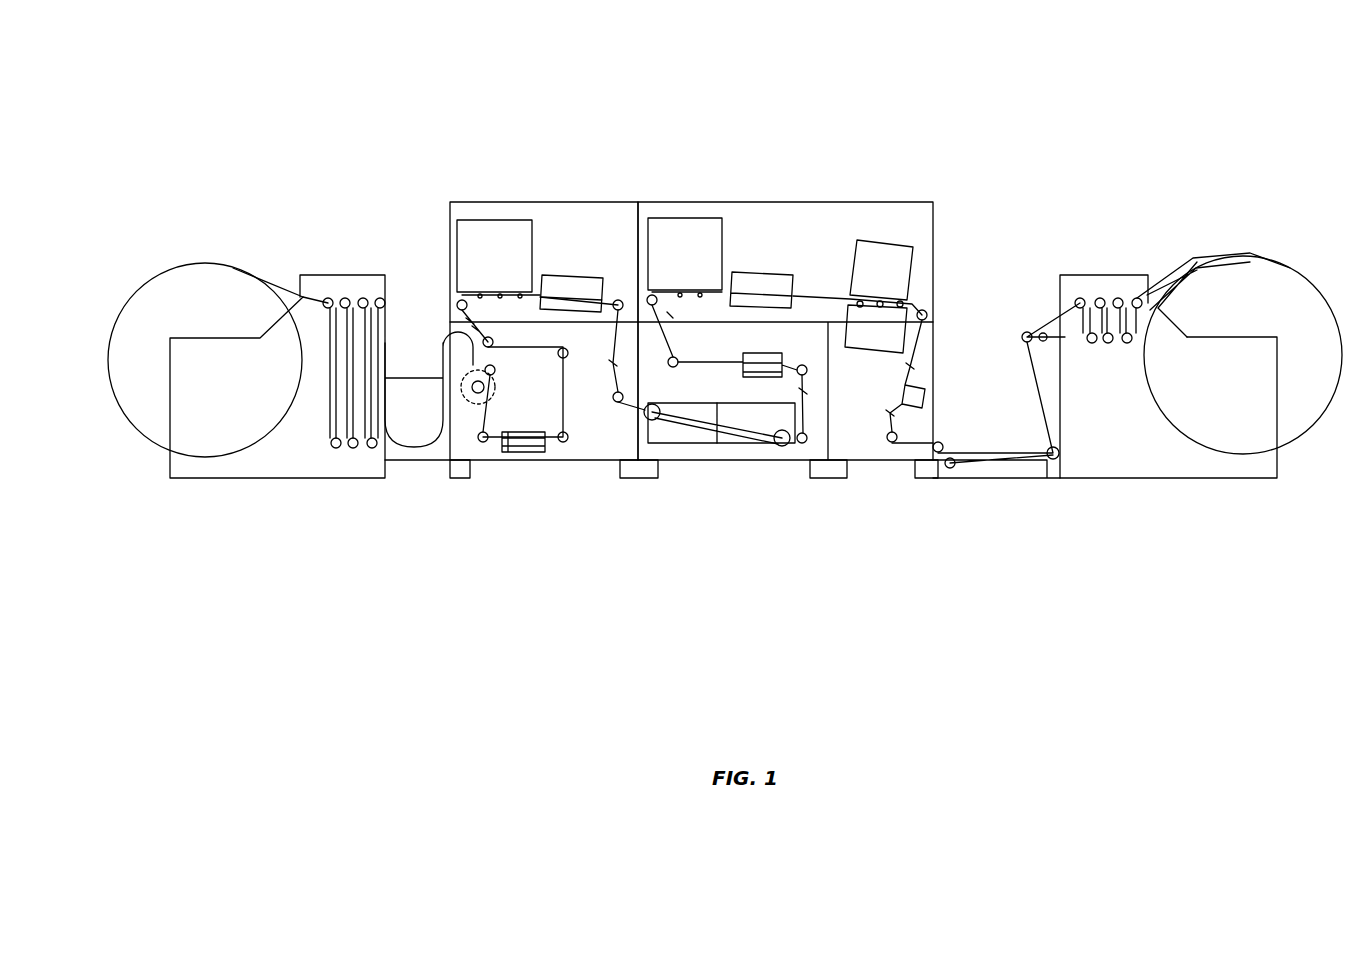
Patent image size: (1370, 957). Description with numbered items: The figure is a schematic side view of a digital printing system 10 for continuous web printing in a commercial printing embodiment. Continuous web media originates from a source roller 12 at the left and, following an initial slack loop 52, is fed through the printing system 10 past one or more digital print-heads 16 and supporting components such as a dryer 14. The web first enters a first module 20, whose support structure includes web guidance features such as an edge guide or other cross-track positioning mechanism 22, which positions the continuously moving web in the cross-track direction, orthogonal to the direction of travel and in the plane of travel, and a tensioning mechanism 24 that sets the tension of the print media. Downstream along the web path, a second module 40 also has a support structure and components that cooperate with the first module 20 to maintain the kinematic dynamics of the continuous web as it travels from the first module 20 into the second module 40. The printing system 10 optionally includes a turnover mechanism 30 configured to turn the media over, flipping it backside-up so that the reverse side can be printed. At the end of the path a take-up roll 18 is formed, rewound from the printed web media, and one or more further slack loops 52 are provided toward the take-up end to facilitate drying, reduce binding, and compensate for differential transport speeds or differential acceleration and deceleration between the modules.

The digital printing system 10 is at (338, 56).
The source roller 12 is at (200, 267).
The dryer 14 is at (568, 273).
The digital print-head 16 is at (457, 232).
The take-up roll 18 is at (1200, 443).
The first module 20 is at (607, 202).
The cross-track positioning mechanism 22 is at (475, 372).
The tensioning mechanism 24 is at (468, 403).
The turnover mechanism 30 is at (753, 443).
The second module 40 is at (885, 198).
The slack loop 52 is at (410, 445).